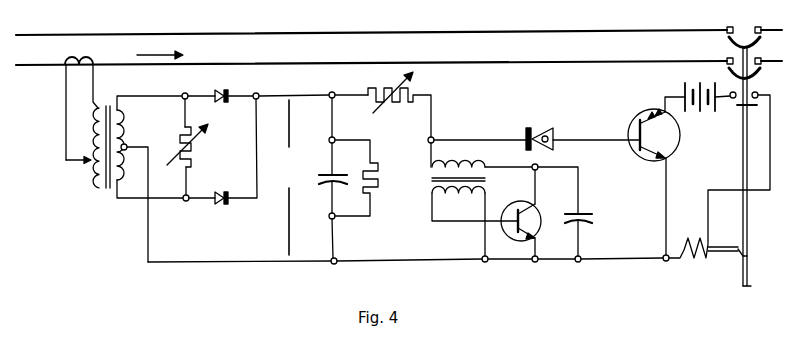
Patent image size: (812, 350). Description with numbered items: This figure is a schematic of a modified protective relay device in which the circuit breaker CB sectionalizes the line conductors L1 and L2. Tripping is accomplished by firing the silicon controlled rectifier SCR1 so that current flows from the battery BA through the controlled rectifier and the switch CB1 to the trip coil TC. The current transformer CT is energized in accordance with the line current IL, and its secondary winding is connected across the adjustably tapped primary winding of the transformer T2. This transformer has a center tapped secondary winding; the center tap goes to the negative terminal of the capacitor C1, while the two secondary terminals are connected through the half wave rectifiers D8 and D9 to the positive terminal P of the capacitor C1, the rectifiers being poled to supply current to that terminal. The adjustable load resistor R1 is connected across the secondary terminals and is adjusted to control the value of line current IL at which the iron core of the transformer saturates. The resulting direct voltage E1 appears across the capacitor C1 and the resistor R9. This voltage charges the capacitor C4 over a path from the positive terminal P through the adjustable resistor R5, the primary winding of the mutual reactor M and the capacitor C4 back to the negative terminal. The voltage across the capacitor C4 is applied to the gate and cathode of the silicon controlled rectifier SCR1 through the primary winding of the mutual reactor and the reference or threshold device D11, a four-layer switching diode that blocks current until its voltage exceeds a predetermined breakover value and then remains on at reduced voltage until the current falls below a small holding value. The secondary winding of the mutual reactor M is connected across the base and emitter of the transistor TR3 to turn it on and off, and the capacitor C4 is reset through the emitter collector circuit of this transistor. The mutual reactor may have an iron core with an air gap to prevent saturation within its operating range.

The line conductor L1 is at (24, 34).
The line conductor L2 is at (26, 67).
The line current IL is at (170, 55).
The current transformer CT is at (66, 59).
The transformer T2 is at (107, 193).
The adjustable load resistor R1 is at (181, 131).
The half wave rectifier D8 is at (220, 101).
The half wave rectifier D9 is at (218, 191).
The positive terminal P is at (330, 93).
The direct voltage E1 is at (287, 177).
The capacitor C1 is at (322, 181).
The resistor R9 is at (379, 183).
The adjustable resistor R5 is at (415, 90).
The reference or threshold device D11 is at (540, 117).
The silicon controlled rectifier SCR1 is at (638, 109).
The mutual reactor M is at (432, 170).
The transistor TR3 is at (503, 209).
The capacitor C4 is at (594, 213).
The battery BA is at (688, 82).
The switch CB1 is at (733, 103).
The circuit breaker CB is at (743, 156).
The trip coil TC is at (684, 241).